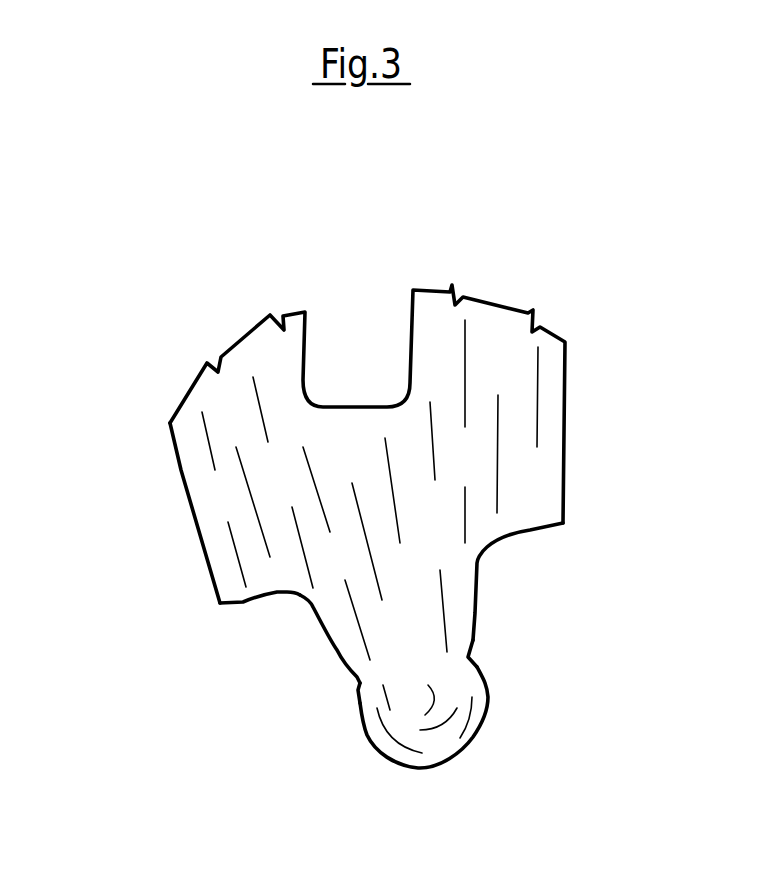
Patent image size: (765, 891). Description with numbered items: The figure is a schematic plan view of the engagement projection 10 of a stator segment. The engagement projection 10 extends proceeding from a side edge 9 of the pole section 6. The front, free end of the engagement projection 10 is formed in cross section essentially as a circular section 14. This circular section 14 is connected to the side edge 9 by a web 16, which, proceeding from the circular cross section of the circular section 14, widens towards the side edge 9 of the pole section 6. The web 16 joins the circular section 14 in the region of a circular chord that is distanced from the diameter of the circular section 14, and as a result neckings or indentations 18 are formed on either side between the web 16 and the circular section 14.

The pole section 6 is at (205, 410).
The side edge 9 is at (242, 600).
The engagement projection 10 is at (490, 623).
The circular section 14 is at (443, 748).
The web 16 is at (350, 628).
The indentations 18 is at (355, 678).